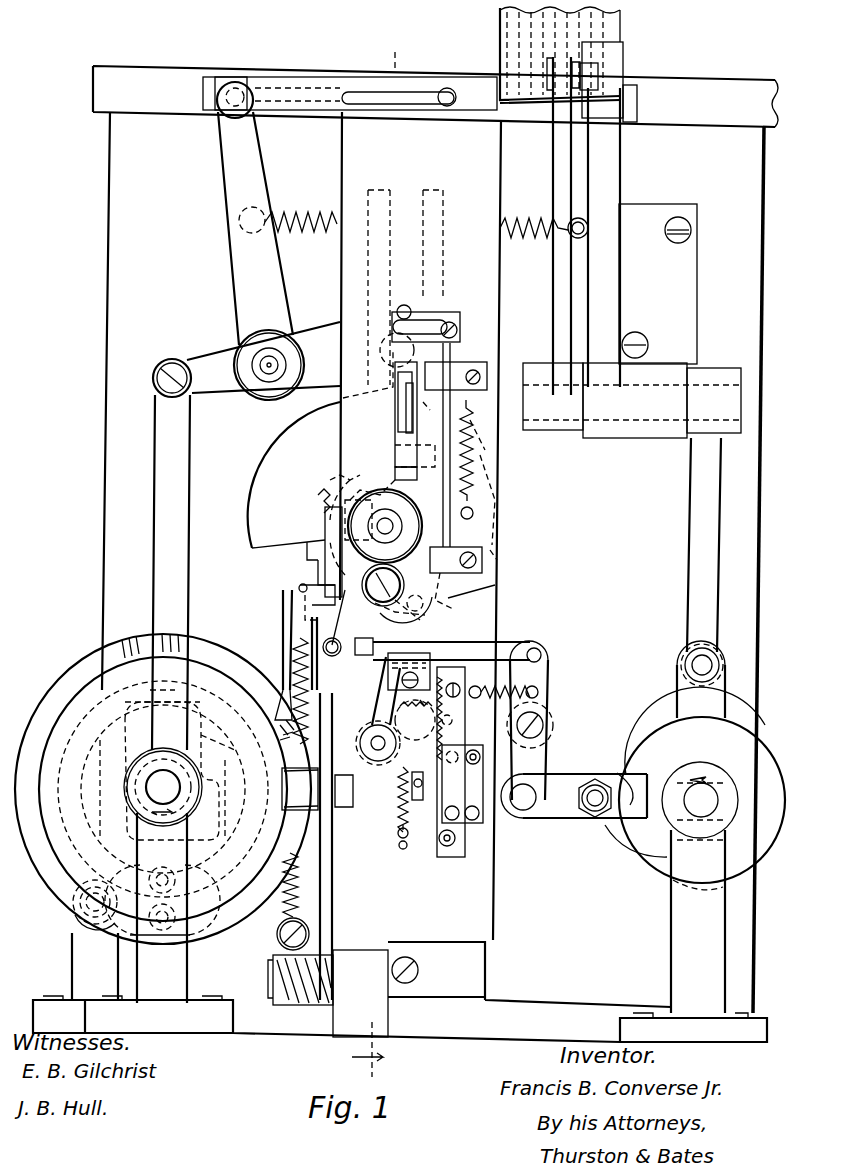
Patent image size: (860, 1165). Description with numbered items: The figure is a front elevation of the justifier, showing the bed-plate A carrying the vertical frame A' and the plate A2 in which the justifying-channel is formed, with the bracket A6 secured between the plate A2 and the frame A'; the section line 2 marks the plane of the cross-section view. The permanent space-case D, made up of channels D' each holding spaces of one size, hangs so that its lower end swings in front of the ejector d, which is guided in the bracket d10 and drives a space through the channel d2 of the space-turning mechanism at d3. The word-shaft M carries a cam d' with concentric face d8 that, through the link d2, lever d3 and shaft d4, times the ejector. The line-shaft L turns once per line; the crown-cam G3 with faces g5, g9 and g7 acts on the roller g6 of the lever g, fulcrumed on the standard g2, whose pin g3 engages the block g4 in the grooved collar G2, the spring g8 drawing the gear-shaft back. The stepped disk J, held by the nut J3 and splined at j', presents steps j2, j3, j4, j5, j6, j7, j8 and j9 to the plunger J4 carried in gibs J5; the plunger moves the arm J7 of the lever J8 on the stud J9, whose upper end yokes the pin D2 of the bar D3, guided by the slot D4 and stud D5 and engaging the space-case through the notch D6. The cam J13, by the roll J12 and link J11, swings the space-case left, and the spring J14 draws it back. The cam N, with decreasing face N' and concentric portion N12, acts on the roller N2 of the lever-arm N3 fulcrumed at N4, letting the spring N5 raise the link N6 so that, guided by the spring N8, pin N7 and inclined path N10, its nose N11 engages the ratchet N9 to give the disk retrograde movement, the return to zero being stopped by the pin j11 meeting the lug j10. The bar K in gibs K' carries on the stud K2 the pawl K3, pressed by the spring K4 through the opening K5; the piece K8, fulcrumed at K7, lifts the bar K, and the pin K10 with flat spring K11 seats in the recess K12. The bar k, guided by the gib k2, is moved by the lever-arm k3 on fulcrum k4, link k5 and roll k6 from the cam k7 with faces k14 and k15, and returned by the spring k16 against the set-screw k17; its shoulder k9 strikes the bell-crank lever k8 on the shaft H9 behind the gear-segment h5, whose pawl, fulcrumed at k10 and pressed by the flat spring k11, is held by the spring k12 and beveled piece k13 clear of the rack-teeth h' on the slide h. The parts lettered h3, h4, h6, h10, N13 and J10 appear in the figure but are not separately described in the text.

The bed-plate A is at (400, 1000).
The vertical frame A' is at (418, 562).
The plate A2 is at (435, 96).
The bracket A6 is at (420, 526).
The permanent space-case D is at (549, 55).
The channels of the space-case D' is at (614, 69).
The pin D2 is at (240, 80).
The bar D3 is at (345, 78).
The slot D4 is at (414, 105).
The stud D5 is at (447, 106).
The notch D6 is at (532, 104).
The ejector d is at (614, 90).
The link d2 is at (712, 548).
The lever d3 is at (714, 400).
The shaft d4 is at (632, 425).
The concentric face of cam d' d8 is at (662, 700).
The bracket d10 is at (604, 237).
The cam d' is at (702, 791).
The word-shaft M is at (700, 800).
The stepped disk J is at (299, 488).
The nut J3 is at (467, 235).
The plunger J4 is at (389, 287).
The gibs J5 is at (446, 262).
The lever arm J7 is at (279, 365).
The lever J8 is at (290, 300).
The stud J9 is at (262, 376).
The arm J10 is at (246, 359).
The link J11 is at (188, 484).
The roll J12 is at (188, 880).
The cam J13 is at (232, 755).
The spring J14 is at (312, 214).
The spline j' is at (368, 381).
The bar K is at (460, 445).
The gibs K' is at (475, 457).
The stud K2 is at (418, 470).
The pawl K3 is at (395, 442).
The spring K4 is at (395, 405).
The opening K5 is at (385, 488).
The fulcrum K7 is at (392, 585).
The bell-crank piece K8 is at (426, 610).
The pin K10 is at (392, 320).
The flat spring K11 is at (452, 315).
The recess K12 is at (404, 305).
The bar k is at (462, 636).
The gib k2 is at (420, 644).
The lever-arm k3 is at (548, 655).
The fulcrum k4 is at (548, 728).
The link k5 is at (535, 818).
The roll k6 is at (583, 812).
The cam k7 is at (627, 758).
The bell-crank lever k8 is at (370, 743).
The shoulder k9 is at (372, 680).
The pawl fulcrum k10 is at (415, 727).
The flat spring k11 is at (416, 696).
The spring k12 is at (398, 818).
The beveled piece k13 is at (416, 832).
The increasing face of cam k7 k14 is at (628, 855).
The decreasing face of cam k7 k15 is at (671, 890).
The spring k16 is at (478, 452).
The set-screw k17 is at (318, 680).
The slide h is at (460, 753).
The rack-teeth h' is at (409, 671).
The screw h3 is at (464, 837).
The pin h4 is at (467, 739).
The gear-segment h5 is at (409, 699).
The screw h6 is at (477, 772).
The pin h10 is at (456, 717).
The shaft H9 is at (397, 799).
The grooved collar G2 is at (383, 526).
The crown-cam G3 is at (70, 676).
The line-shaft L is at (163, 787).
The lever g is at (333, 857).
The standard g2 is at (328, 993).
The pin g3 is at (325, 520).
The block g4 is at (346, 483).
The increasing face of cam G3 g5 is at (280, 743).
The roller g6 is at (317, 789).
The decreasing face of cam G3 g7 is at (150, 690).
The spring g8 is at (310, 893).
The level face of cam G3 g9 is at (222, 645).
The step of disk J j2 is at (429, 413).
The step of disk J j3 is at (462, 425).
The step of disk J j4 is at (497, 492).
The step of disk J j5 is at (497, 548).
The step of disk J j6 is at (462, 592).
The step of disk J j7 is at (403, 616).
The step of disk J j8 is at (337, 647).
The step of disk J j9 is at (331, 617).
The lug j10 is at (411, 619).
The pin j11 is at (498, 602).
The cam N is at (218, 726).
The decreasing face of cam N N' is at (161, 683).
The roller N2 is at (184, 916).
The lever-arm N3 is at (276, 934).
The standard N4 is at (72, 910).
The spring N5 is at (290, 660).
The link N6 is at (344, 920).
The pin N7 is at (298, 583).
The spring N8 is at (283, 640).
The ratchet N9 is at (311, 499).
The inclined path N10 is at (304, 604).
The nose N11 is at (316, 566).
The concentric portion of cam N N12 is at (60, 768).
The roller N13 is at (135, 870).
The section line 2 is at (375, 565).